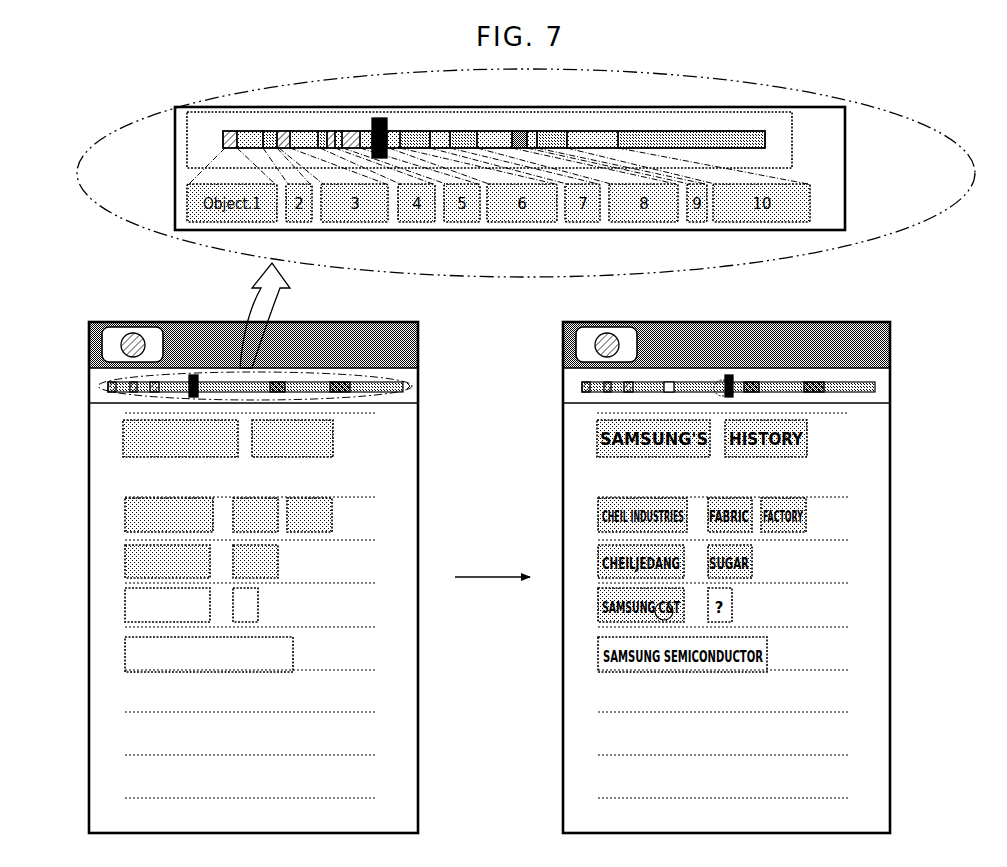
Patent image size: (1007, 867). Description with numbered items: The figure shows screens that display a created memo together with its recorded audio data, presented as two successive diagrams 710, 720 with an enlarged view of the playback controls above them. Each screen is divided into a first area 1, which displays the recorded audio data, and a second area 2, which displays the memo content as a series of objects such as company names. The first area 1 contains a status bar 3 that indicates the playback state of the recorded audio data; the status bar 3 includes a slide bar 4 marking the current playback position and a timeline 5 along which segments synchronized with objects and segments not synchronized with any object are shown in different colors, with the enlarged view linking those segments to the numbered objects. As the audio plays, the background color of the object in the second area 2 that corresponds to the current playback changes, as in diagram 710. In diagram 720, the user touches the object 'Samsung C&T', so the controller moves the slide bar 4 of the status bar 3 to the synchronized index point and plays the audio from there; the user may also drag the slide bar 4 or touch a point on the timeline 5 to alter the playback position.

The first area 1 is at (80, 416).
The second area 2 is at (80, 833).
The status bar 3 is at (195, 133).
The slide bar 4 is at (378, 118).
The timeline 5 is at (764, 131).
The diagram 710 is at (147, 318).
The diagram 720 is at (828, 318).